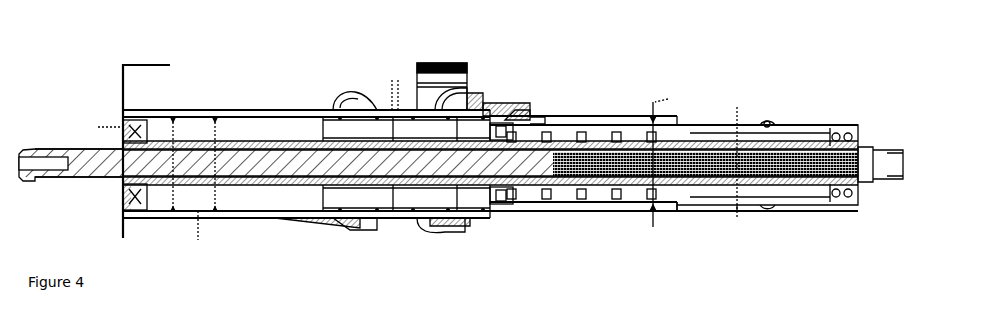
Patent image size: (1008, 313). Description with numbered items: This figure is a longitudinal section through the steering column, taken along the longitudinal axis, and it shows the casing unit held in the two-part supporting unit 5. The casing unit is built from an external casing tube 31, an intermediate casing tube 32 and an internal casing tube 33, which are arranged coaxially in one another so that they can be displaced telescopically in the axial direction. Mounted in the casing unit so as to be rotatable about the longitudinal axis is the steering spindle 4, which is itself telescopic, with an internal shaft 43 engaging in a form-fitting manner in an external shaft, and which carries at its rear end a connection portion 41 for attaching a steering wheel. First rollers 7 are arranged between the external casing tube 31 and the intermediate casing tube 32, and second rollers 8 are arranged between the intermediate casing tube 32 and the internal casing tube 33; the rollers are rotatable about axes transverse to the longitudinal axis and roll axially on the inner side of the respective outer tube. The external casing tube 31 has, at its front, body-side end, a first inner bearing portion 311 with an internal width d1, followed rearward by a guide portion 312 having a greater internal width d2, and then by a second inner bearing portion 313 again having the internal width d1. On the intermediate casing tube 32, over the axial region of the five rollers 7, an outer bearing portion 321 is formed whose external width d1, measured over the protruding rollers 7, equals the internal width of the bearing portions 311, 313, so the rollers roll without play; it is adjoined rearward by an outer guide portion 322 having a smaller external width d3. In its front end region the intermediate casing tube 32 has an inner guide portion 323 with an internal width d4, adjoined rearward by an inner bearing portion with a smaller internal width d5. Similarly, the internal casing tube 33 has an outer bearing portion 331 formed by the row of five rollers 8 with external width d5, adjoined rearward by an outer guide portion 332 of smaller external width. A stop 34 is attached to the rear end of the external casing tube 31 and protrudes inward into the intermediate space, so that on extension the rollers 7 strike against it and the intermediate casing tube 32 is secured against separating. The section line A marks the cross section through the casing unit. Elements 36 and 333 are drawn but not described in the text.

The steering spindle 4 is at (236, 115).
The supporting unit 5 is at (143, 50).
The first rollers 7 is at (386, 220).
The second rollers 8 is at (556, 212).
The external casing tube 31 is at (266, 110).
The intermediate casing tube 32 is at (576, 116).
The internal casing tube 33 is at (718, 123).
The stop 34 is at (521, 106).
The sealing ring 36 is at (745, 108).
The connection portion 41 is at (892, 147).
The internal shaft 43 is at (188, 110).
The first inner bearing portion 311 is at (172, 180).
The guide portion 312 is at (260, 180).
The second inner bearing portion 313 is at (490, 220).
The outer bearing portion 321 is at (356, 95).
The outer guide portion 322 is at (541, 112).
The inner guide portion 323 is at (430, 222).
The outer bearing portion 331 is at (587, 214).
The outer guide portion 332 is at (735, 212).
The stop 333 is at (677, 212).
The internal width d1 is at (440, 136).
The internal width d2 is at (220, 147).
The external width d3 is at (668, 95).
The internal width d4 is at (400, 90).
The internal width d5 is at (634, 160).
The cross section A- A is at (412, 262).